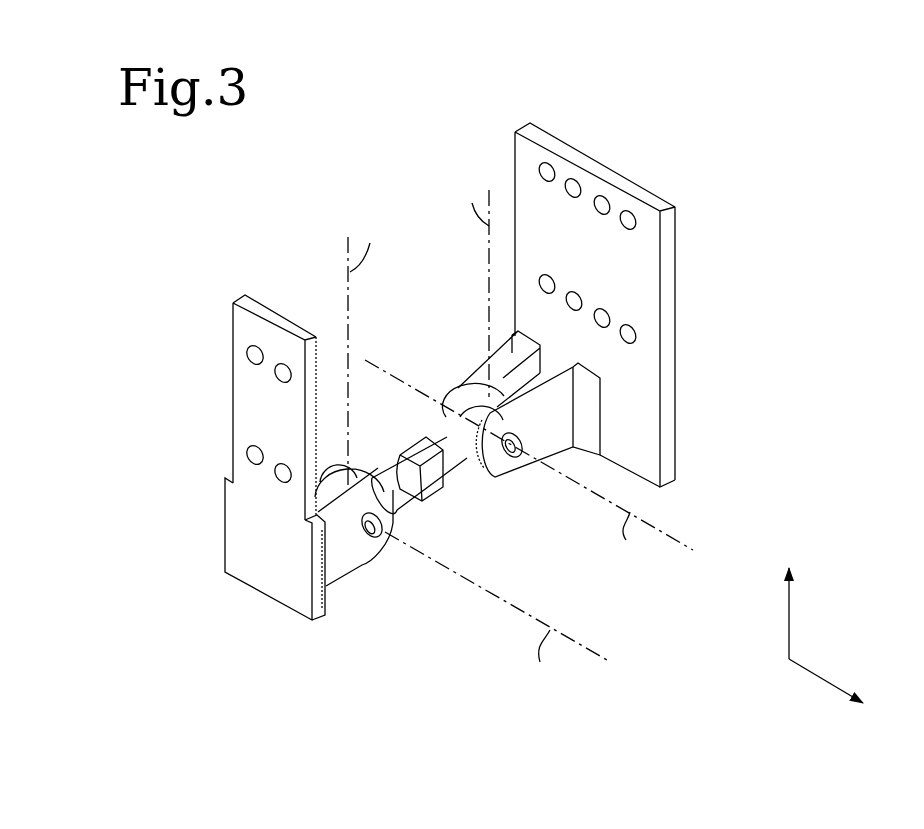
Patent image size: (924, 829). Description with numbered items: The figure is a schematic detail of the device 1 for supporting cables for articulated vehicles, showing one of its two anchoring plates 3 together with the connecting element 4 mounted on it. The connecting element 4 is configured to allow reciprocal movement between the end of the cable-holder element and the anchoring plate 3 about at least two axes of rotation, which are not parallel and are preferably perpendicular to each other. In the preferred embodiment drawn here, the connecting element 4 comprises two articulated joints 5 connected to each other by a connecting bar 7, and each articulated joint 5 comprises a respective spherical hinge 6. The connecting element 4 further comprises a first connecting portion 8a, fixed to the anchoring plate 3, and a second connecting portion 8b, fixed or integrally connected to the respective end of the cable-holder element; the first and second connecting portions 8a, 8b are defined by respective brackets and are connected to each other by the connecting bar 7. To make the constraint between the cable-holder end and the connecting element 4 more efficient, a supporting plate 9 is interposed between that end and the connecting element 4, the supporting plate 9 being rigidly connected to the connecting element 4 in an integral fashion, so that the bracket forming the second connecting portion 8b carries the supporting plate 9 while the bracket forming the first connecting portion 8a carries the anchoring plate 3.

The device for supporting cables 1 is at (282, 655).
The anchoring plate 3 is at (628, 248).
The connecting element 4 is at (461, 612).
The articulated joint 5 is at (392, 568).
The spherical hinge 6 is at (345, 490).
The connecting bar 7 is at (403, 485).
The first connecting portion 8a is at (552, 402).
The second connecting portion 8b is at (344, 562).
The supporting plate 9 is at (253, 400).